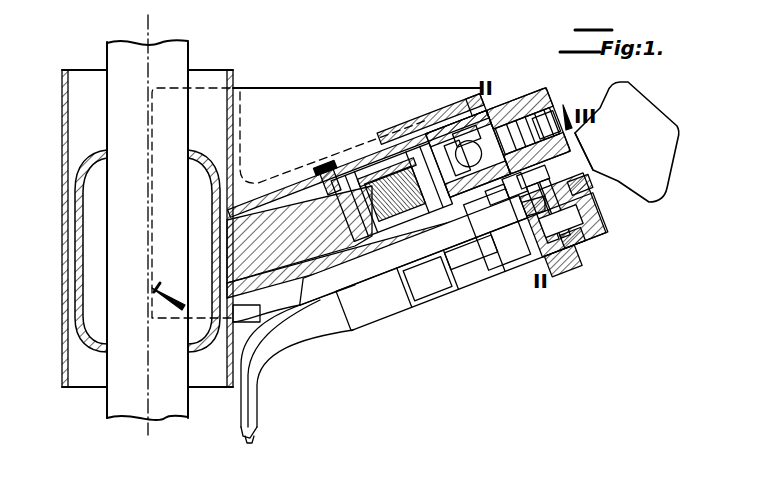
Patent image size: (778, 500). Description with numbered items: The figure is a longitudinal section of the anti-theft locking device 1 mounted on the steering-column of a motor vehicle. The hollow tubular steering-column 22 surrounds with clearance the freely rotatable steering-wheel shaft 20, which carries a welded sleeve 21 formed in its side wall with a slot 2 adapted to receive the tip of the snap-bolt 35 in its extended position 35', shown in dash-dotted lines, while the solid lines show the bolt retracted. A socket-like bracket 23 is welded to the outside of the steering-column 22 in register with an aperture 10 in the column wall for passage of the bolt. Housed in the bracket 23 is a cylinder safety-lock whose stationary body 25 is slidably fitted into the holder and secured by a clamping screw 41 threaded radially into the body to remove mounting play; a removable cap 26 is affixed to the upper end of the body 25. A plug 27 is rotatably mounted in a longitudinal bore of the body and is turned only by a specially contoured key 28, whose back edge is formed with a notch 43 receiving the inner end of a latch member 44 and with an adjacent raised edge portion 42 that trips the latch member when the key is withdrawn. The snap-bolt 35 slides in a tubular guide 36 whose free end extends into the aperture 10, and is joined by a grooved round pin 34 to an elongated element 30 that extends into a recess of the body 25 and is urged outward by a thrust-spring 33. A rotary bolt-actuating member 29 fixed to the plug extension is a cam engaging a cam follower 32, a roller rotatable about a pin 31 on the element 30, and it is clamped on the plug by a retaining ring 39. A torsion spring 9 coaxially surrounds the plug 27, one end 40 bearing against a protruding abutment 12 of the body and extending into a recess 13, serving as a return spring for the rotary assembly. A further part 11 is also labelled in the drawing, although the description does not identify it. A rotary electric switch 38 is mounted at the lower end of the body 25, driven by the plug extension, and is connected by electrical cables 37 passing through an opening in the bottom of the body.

The locking device 1 is at (642, 91).
The slot 2 is at (207, 317).
The torsion spring 9 is at (470, 134).
The aperture 10 is at (160, 363).
The pin 11 is at (459, 279).
The protruding abutment 12 is at (520, 280).
The recess 13 is at (527, 278).
The steering-wheel shaft 20 is at (123, 398).
The sleeve 21 is at (200, 353).
The steering-column 22 is at (68, 388).
The socket-like bracket 23 is at (248, 105).
The stationary body 25 is at (453, 107).
The removable cap 26 is at (598, 238).
The plug 27 is at (588, 195).
The key 28 is at (657, 170).
The rotary bolt-actuating member 29 is at (480, 293).
The elongated element 30 is at (427, 163).
The pin 31 is at (484, 120).
The cam follower 32 is at (494, 130).
The thrust-spring 33 is at (523, 120).
The grooved straight round pin 34 is at (331, 196).
The snap-bolt 35 is at (299, 161).
The extended position of snap-bolt 35' is at (180, 281).
The tubular guide 36 is at (273, 308).
The electrical connecting cables 37 is at (251, 393).
The rotary electric switch 38 is at (420, 282).
The retaining ring 39 is at (505, 282).
The spring end 40 is at (505, 280).
The clamping screw 41 is at (566, 268).
The raised edge portion 42 is at (486, 113).
The notch 43 is at (528, 275).
The latch member 44 is at (551, 137).